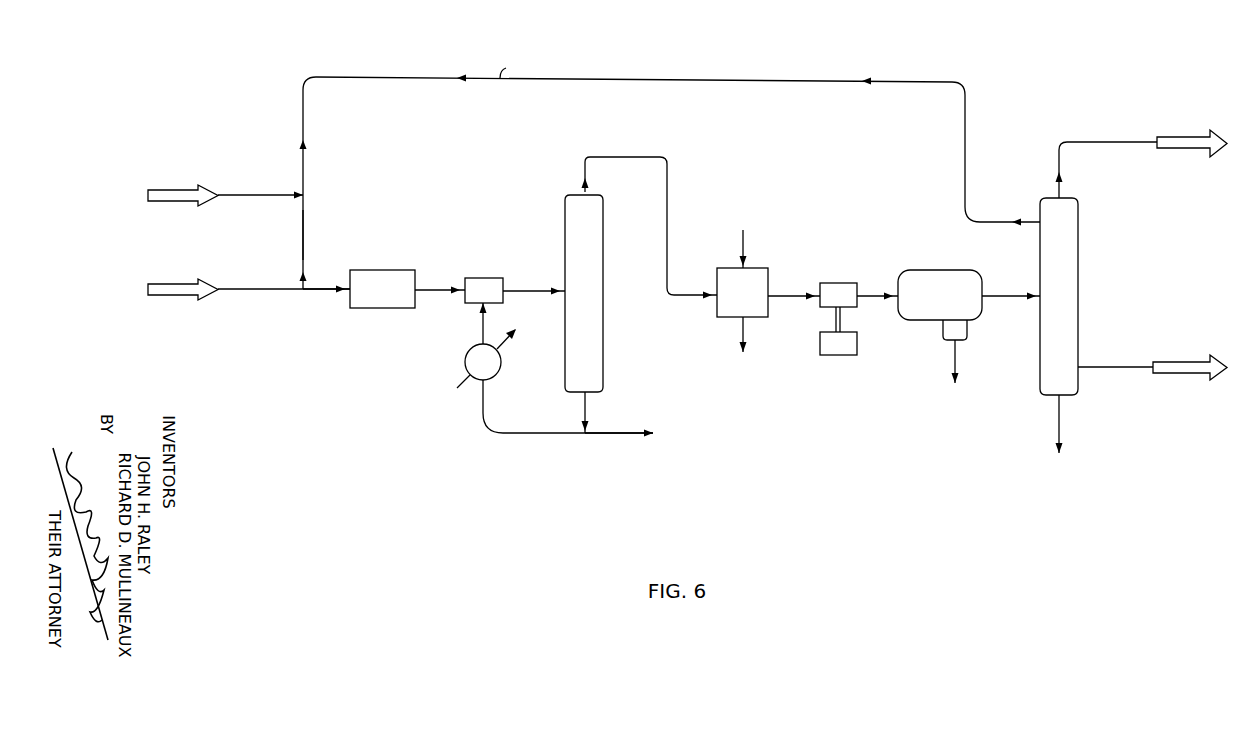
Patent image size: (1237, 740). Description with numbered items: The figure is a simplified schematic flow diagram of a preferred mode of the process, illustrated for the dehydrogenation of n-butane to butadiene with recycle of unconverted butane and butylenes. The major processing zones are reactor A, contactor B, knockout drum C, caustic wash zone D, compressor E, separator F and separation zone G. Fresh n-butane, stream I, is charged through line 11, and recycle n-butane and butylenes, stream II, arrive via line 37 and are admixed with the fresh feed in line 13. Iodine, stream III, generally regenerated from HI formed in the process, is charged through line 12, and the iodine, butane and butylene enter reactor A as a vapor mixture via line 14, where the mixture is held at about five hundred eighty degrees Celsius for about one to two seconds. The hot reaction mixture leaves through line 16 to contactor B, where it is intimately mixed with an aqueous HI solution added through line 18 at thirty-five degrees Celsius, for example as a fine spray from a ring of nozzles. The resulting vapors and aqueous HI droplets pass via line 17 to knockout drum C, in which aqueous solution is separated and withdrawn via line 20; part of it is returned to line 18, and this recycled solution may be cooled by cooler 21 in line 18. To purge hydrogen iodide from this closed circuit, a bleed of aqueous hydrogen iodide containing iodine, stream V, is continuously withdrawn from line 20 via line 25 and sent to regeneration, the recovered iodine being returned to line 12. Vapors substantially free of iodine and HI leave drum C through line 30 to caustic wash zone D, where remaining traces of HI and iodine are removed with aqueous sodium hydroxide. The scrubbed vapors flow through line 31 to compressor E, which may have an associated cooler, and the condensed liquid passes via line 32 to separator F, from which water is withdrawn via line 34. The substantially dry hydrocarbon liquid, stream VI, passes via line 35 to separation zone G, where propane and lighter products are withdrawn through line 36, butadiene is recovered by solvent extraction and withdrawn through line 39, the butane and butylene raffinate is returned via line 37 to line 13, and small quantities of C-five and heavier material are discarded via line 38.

The line 11 is at (262, 200).
The line 12 is at (255, 293).
The line 13 is at (305, 231).
The line 14 is at (321, 293).
The line 16 is at (433, 284).
The line 17 is at (523, 285).
The line 18 is at (481, 322).
The line 20 is at (580, 410).
The cooler 21 is at (500, 374).
The line 25 is at (615, 436).
The line 30 is at (650, 215).
The line 31 is at (777, 292).
The line 32 is at (864, 298).
The line 34 is at (958, 354).
The line 35 is at (996, 299).
The line 36 is at (1133, 149).
The line 37 is at (967, 144).
The line 38 is at (1062, 420).
The line 39 is at (1100, 370).
The stream I is at (271, 190).
The stream II is at (295, 125).
The stream III is at (271, 284).
The stream V is at (604, 424).
The stream VI is at (997, 287).
The reactor A is at (373, 307).
The contactor B is at (484, 290).
The knockout drum C is at (565, 355).
The caustic wash zone D is at (743, 309).
The compressor E is at (843, 330).
The separator F is at (931, 393).
The separation zone G is at (1045, 387).